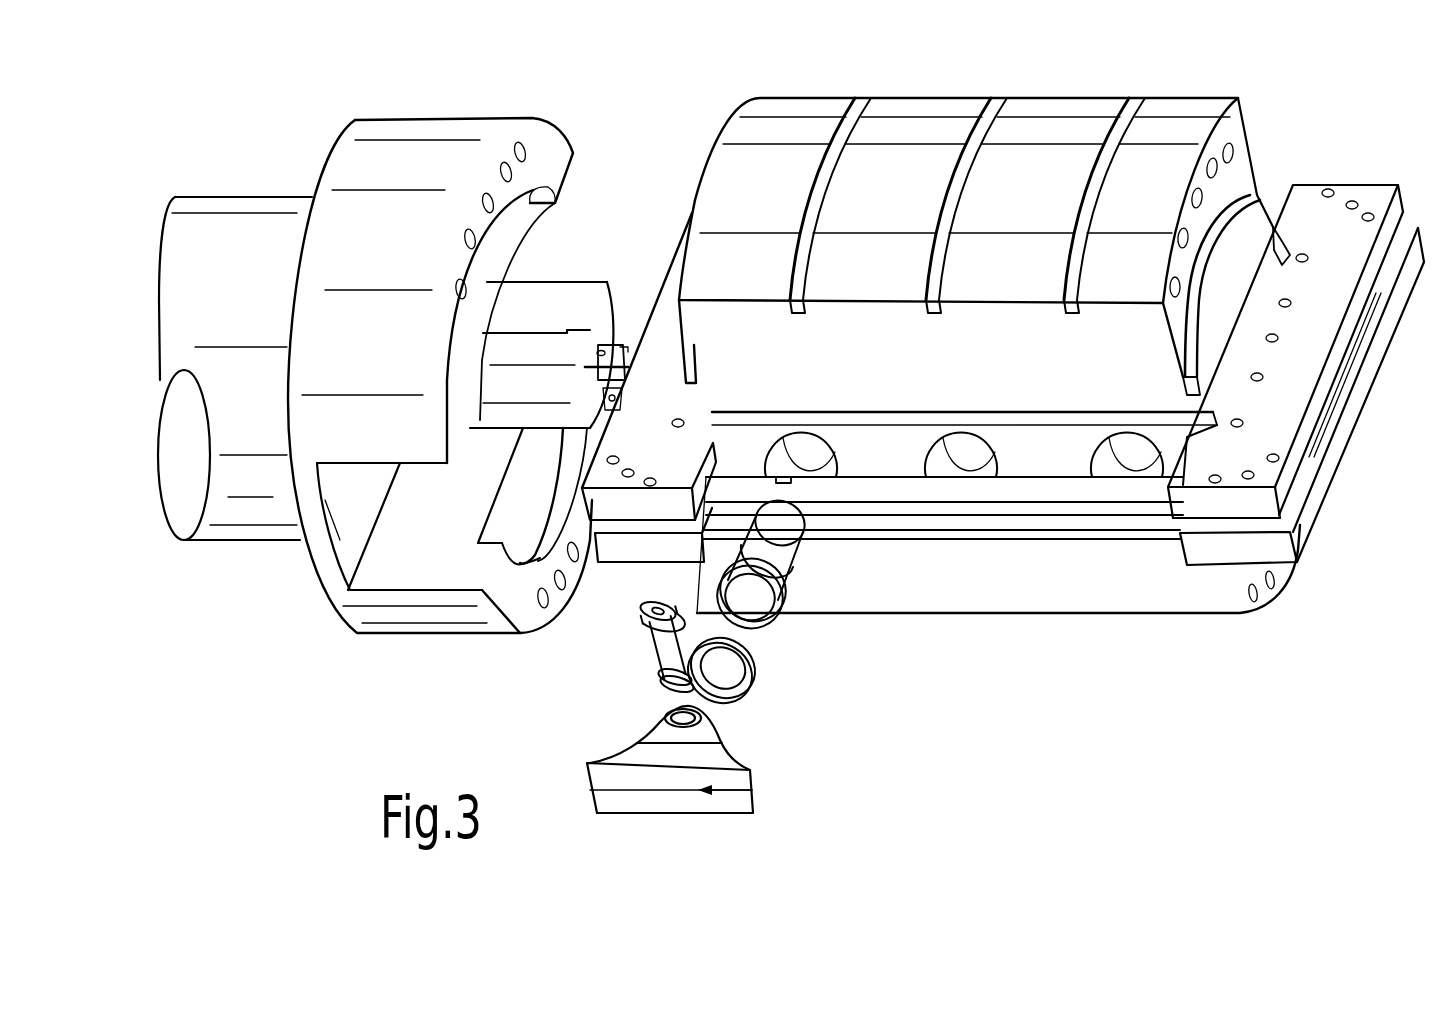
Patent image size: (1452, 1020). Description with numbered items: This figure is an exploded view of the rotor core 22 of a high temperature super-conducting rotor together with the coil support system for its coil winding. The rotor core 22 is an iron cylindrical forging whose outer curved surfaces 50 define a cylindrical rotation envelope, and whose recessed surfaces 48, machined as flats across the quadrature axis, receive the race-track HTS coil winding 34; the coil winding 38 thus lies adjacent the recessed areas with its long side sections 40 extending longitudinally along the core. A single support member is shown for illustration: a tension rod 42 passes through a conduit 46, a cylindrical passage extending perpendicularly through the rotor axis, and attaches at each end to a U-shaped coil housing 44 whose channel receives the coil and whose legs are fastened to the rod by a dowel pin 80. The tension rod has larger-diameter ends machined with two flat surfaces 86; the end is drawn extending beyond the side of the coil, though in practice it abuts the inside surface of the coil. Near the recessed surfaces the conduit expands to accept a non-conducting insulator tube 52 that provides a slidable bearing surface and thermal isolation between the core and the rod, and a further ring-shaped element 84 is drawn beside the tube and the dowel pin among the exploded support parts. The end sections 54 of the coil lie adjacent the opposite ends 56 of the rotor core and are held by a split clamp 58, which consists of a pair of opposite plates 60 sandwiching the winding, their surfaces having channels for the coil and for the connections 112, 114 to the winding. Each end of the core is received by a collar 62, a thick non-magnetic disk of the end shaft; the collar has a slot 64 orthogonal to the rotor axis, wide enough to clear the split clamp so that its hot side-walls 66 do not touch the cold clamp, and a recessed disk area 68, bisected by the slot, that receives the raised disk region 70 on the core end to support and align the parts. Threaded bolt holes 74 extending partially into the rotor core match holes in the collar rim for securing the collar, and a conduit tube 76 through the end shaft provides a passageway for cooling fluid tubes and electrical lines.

The rotor core 22 is at (910, 275).
The HTS coil winding 34 is at (1094, 495).
The coil winding 38 is at (1098, 528).
The side sections of the coil 40 is at (948, 537).
The tension rod 42 is at (805, 477).
The coil housing 44 is at (752, 788).
The conduit 46 is at (1000, 443).
The recessed surface 48 is at (901, 366).
The outer curved surface 50 is at (886, 256).
The insulator tube 52 is at (752, 633).
The end section of the coil winding 54 is at (1293, 510).
The end of the rotor core 56 is at (723, 152).
The split clamp 58 is at (1420, 223).
The clamp plate 60 is at (1343, 198).
The collar 62 is at (417, 123).
The slot 64 is at (350, 527).
The side-walls of the slot 66 is at (380, 466).
The recessed disk area 68 is at (510, 227).
The raised disk region 70 is at (1262, 185).
The threaded bolt holes 74 is at (1232, 152).
The conduit tube 76 is at (537, 350).
The dowel pin 80 is at (646, 649).
The washer 84 is at (747, 690).
The flat surfaces at tension rod end 86 is at (780, 527).
The connection to the winding 112 is at (600, 345).
The connection to the winding 114 is at (616, 357).